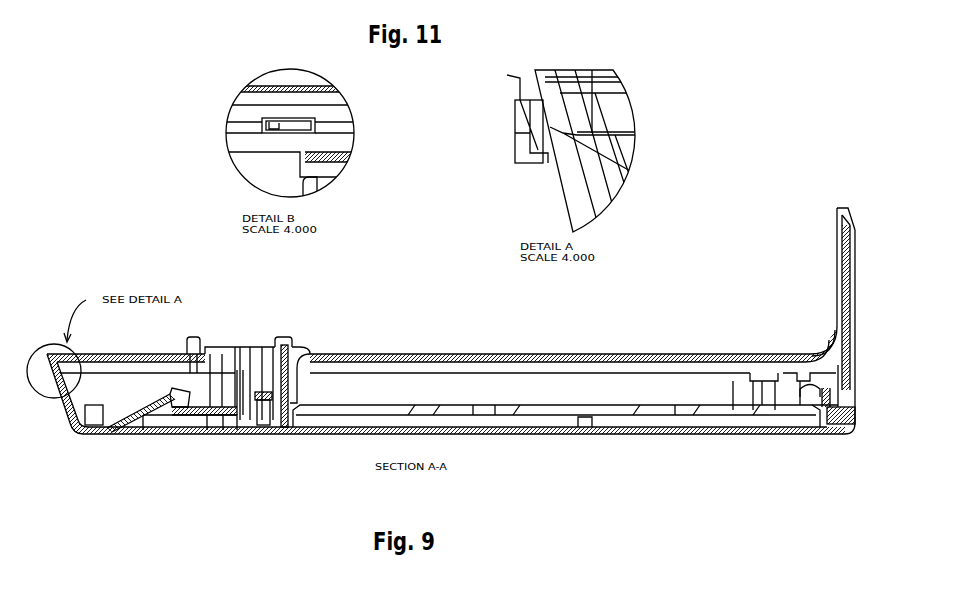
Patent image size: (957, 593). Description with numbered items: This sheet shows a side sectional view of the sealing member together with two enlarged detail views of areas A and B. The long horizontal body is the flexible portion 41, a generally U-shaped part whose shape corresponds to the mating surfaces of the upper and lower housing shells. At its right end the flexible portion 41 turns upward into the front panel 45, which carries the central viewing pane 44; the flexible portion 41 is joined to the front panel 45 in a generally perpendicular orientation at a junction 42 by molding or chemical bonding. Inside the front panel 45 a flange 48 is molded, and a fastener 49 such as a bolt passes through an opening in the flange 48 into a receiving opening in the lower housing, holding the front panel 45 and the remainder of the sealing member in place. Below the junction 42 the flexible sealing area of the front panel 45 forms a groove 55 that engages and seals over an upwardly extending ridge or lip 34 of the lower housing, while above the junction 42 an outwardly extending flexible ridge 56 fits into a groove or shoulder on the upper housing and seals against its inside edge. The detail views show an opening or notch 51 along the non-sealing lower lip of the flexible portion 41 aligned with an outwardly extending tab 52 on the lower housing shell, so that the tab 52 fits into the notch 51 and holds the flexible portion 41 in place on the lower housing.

In FIG. 9, the lip 34 is at (838, 436).
In FIG. 9, the flexible portion 41 is at (678, 373).
In FIG. 9, the junction 42 is at (833, 352).
In FIG. 9, the viewing pane 44 is at (848, 323).
In FIG. 9, the front panel 45 is at (857, 292).
In FIG. 9, the flange 48 is at (815, 398).
In FIG. 9, the fastener 49 is at (812, 386).
In FIG. 11, the opening or notch 51 is at (315, 123).
In FIG. 11, the tab 52 is at (279, 124).
In FIG. 9, the groove 55 is at (853, 410).
In FIG. 9, the flexible ridge 56 is at (842, 207).